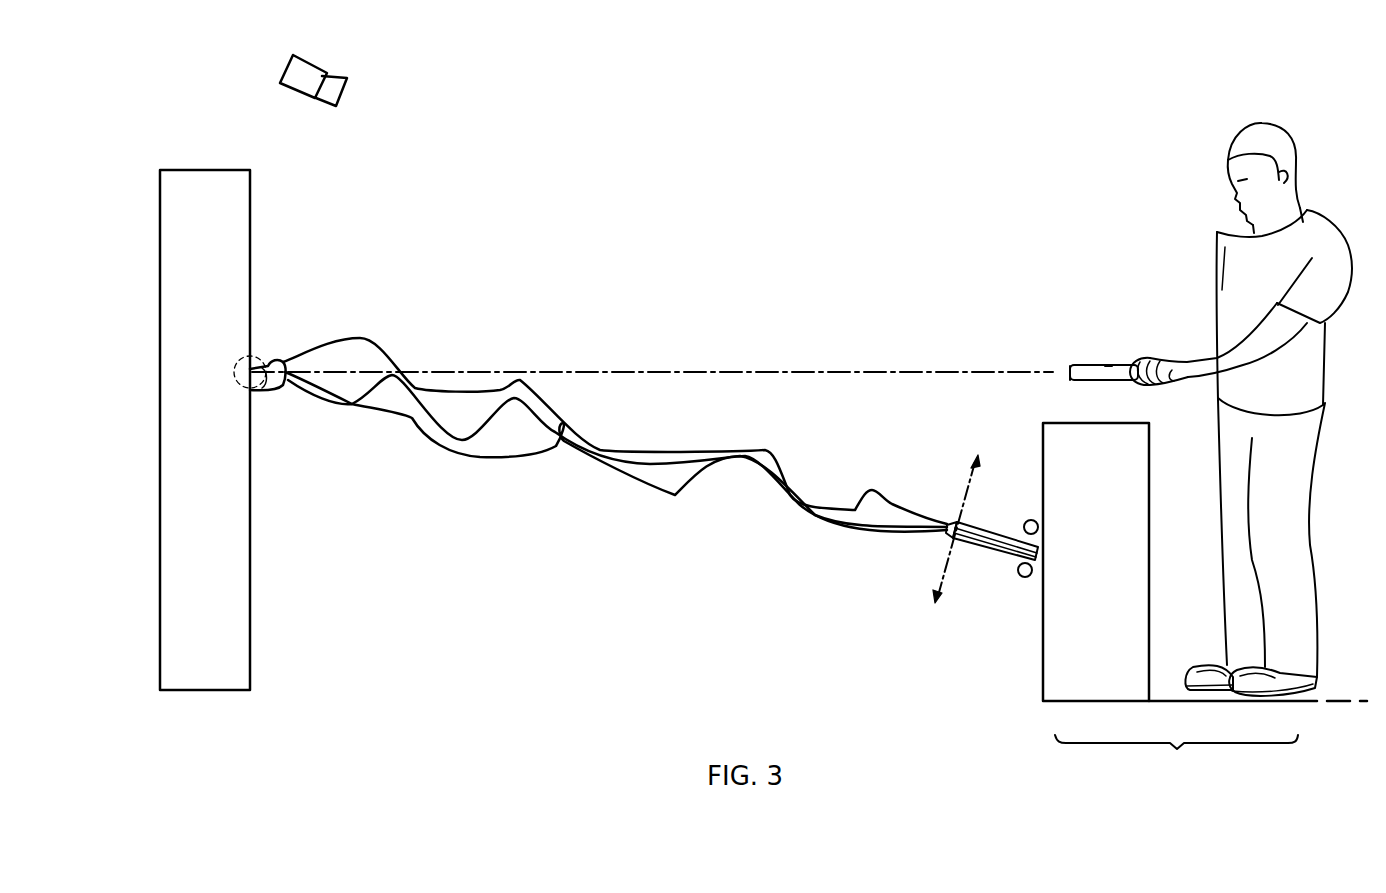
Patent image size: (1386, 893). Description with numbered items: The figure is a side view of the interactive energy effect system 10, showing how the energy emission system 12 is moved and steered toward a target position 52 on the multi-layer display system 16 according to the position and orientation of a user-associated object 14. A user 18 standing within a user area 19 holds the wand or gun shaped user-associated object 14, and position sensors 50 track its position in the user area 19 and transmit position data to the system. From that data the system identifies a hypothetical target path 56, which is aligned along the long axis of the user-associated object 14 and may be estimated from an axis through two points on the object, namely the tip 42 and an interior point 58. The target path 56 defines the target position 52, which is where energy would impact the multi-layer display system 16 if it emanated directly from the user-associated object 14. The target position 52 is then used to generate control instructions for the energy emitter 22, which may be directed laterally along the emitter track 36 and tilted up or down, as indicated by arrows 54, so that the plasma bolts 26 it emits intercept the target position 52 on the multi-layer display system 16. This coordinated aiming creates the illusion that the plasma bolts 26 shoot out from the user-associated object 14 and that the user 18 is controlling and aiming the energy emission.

The interactive energy effect system 10 is at (1232, 68).
The energy emission system 12 is at (979, 638).
The user-associated object 14 is at (1108, 378).
The multi-layer display system 16 is at (139, 354).
The user 18 is at (1213, 158).
The user area 19 is at (1211, 743).
The energy emitter 22 is at (995, 556).
The plasma bolts 26 is at (545, 459).
The emitter track 36 is at (1032, 571).
The tip 42 is at (1072, 370).
The position sensors 50 is at (297, 93).
The target position 52 is at (267, 390).
The arrows 54 is at (953, 582).
The target path 56 is at (705, 359).
The interior point 58 is at (1110, 363).